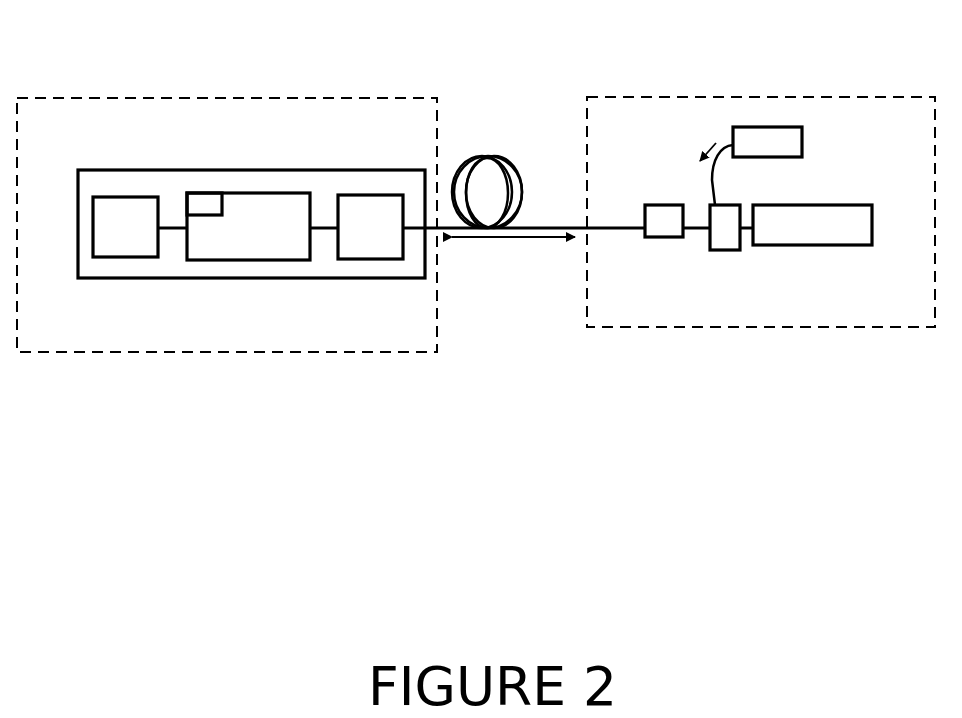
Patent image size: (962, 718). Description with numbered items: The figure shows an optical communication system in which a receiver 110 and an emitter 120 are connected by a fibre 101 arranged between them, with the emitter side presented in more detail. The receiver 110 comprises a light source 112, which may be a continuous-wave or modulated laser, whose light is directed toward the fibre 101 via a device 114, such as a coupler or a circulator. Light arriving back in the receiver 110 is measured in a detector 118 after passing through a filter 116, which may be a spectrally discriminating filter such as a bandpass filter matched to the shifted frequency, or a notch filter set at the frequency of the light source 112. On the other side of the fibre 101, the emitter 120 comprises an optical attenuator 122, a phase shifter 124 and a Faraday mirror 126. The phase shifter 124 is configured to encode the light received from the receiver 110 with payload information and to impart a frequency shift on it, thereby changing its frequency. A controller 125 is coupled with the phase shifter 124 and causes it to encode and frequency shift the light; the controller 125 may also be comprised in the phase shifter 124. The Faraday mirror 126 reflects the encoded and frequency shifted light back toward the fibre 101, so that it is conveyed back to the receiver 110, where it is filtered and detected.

The fibre 101 is at (527, 229).
The receiver 110 is at (761, 212).
The light source 112 is at (788, 138).
The device 114 is at (655, 213).
The filter 116 is at (719, 238).
The detector 118 is at (838, 242).
The emitter 120 is at (303, 170).
The optical attenuator 122 is at (400, 243).
The phase shifter 124 is at (282, 243).
The controller 125 is at (200, 204).
The Faraday mirror 126 is at (150, 243).